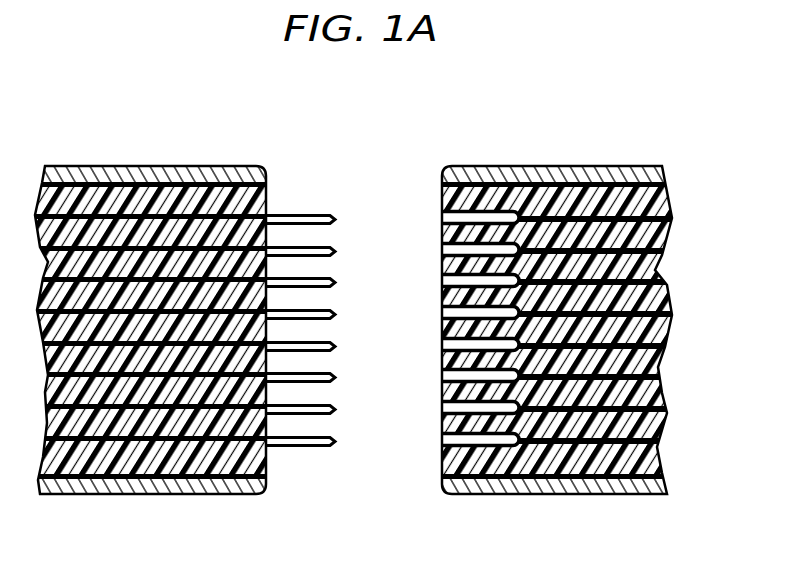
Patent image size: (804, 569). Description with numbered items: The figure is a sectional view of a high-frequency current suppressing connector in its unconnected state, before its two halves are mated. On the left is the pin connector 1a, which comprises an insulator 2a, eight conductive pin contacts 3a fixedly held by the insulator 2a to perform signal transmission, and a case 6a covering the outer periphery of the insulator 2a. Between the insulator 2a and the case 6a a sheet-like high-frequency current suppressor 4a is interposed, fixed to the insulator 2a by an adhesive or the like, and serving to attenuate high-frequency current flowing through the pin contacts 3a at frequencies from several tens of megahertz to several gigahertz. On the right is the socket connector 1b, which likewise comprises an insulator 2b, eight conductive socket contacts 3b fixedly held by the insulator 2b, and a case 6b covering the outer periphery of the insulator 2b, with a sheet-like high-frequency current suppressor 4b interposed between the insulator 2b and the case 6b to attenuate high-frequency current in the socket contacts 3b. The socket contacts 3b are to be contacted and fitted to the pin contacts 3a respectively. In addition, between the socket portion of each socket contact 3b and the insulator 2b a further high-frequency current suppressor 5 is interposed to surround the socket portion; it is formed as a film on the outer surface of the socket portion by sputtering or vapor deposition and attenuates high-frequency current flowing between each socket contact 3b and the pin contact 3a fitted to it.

The pin connector 1a is at (182, 317).
The socket connector 1b is at (564, 315).
The insulator 2a is at (255, 208).
The insulator 2b is at (447, 205).
The pin contacts 3a is at (300, 447).
The socket contacts 3b is at (662, 460).
The high-frequency current suppressor 4a is at (63, 181).
The high-frequency current suppressor 4b is at (493, 181).
The high-frequency current suppressor 5 is at (463, 492).
The case 6a is at (212, 179).
The case 6b is at (642, 179).